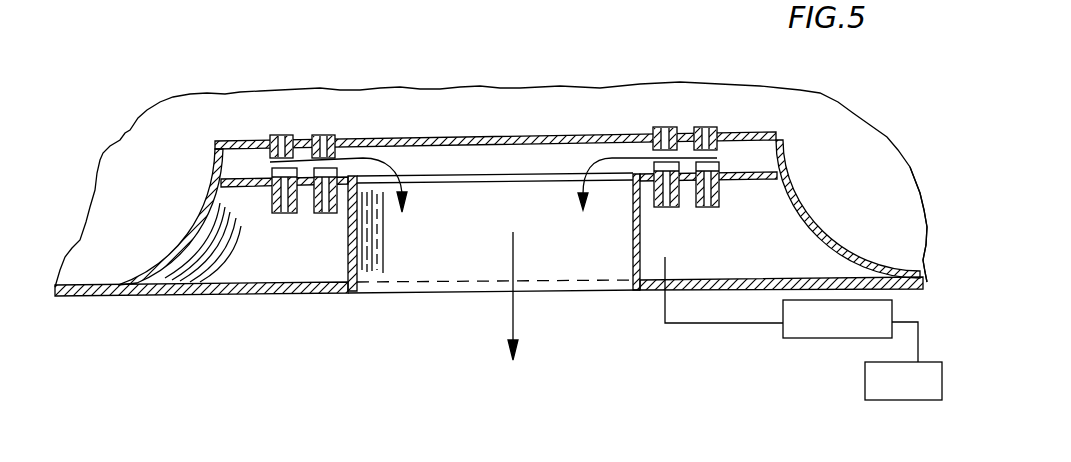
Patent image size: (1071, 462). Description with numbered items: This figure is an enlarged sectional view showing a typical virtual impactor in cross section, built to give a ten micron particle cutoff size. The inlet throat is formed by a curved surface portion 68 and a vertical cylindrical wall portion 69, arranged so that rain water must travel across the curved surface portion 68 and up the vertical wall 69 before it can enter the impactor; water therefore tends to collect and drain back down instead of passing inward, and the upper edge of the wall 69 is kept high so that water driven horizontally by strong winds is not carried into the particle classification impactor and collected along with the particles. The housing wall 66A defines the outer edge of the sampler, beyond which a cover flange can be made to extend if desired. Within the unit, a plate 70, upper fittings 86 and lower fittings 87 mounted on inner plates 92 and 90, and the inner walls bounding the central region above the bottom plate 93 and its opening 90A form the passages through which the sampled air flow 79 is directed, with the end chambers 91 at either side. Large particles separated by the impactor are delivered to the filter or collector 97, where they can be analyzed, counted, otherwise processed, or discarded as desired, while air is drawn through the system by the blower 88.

The wall 66A is at (922, 256).
The curved surface portion of inlet throat section 68 is at (820, 228).
The vertical cylindrical wall portion of inlet throat section 69 is at (768, 152).
The top plate 70 is at (500, 137).
The gas flow 79 is at (279, 118).
The upper nozzle fittings 86 is at (297, 136).
The lower nozzle fittings 87 is at (270, 213).
The blower 88 is at (890, 400).
The inner partition plate 90 is at (752, 172).
The bottom opening 90A is at (627, 263).
The end chambers 91 is at (197, 272).
The inner plate 92 is at (318, 213).
The bottom plate 93 is at (413, 267).
The filter or collector 97 is at (813, 340).